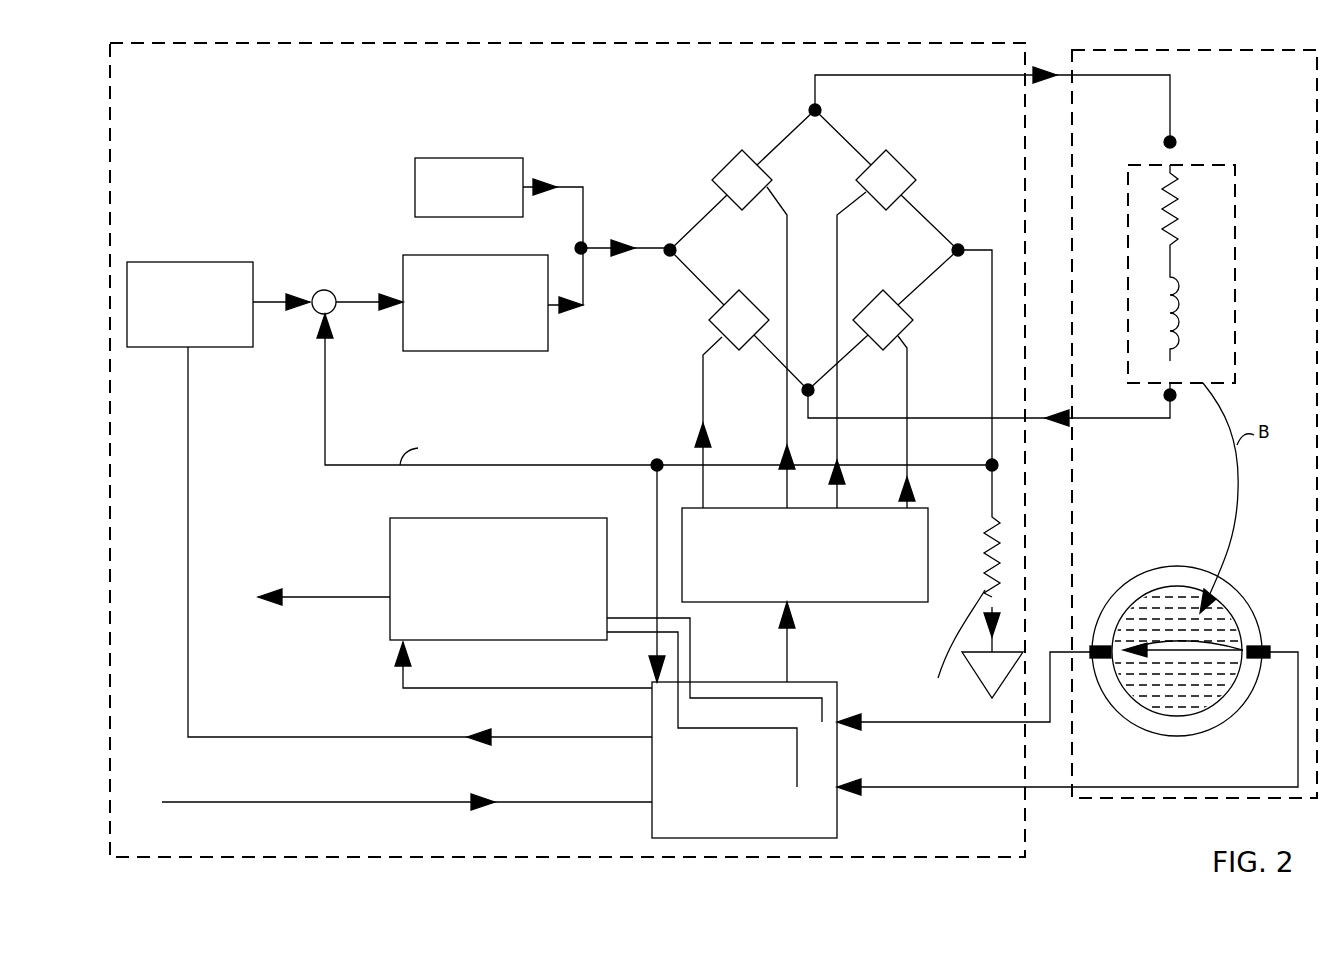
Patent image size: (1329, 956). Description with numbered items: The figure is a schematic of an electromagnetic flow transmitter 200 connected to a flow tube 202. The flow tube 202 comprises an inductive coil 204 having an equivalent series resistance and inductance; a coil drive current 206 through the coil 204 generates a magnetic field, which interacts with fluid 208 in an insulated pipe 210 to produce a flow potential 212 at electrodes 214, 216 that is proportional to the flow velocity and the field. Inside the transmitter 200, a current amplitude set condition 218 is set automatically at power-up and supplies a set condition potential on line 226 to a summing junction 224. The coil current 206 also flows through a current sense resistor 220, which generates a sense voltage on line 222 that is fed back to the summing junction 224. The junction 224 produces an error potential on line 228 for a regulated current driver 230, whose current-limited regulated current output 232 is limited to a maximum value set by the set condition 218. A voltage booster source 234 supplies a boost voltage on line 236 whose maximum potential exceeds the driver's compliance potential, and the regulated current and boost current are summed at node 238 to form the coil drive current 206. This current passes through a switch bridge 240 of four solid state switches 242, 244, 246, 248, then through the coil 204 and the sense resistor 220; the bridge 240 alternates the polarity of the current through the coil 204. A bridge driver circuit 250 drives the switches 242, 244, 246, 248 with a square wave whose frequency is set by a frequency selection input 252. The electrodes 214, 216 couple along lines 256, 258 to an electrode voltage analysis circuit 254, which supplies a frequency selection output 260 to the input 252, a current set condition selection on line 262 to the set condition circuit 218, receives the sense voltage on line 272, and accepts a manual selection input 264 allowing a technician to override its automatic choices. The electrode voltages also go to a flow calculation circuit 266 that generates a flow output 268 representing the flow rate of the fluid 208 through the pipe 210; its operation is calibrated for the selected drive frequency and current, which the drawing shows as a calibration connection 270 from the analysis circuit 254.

The electromagnetic flow transmitter 200 is at (915, 43).
The flow tube 202 is at (1092, 50).
The inductive coil 204 is at (1192, 165).
The coil drive current 206 is at (1047, 70).
The fluid 208 is at (1212, 622).
The insulated pipe 210 is at (1165, 567).
The flow potential 212 is at (1215, 648).
The electrode 214 is at (1092, 692).
The electrode 216 is at (1262, 692).
The current amplitude set condition 218 is at (222, 262).
The current sense resistor 220 is at (985, 548).
The line carrying voltage Vsense 222 is at (326, 393).
The summing junction 224 is at (315, 290).
The line carrying set condition potential 226 is at (272, 303).
The error potential line 228 is at (366, 298).
The regulated current driver 230 is at (412, 255).
The regulated current output 232 is at (552, 310).
The voltage booster source 234 is at (450, 158).
The boost voltage line 236 is at (530, 185).
The node 238 is at (583, 245).
The switch bridge 240 is at (820, 299).
The solid state switch 242 is at (760, 172).
The solid state switch 244 is at (898, 160).
The solid state switch 246 is at (746, 290).
The solid state switch 248 is at (868, 300).
The bridge driver circuit 250 is at (851, 560).
The frequency selection input 252 is at (775, 606).
The electrode voltage analysis circuit 254 is at (838, 815).
The line 256 is at (930, 722).
The line 258 is at (940, 787).
The frequency selection output 260 is at (780, 682).
The current set condition selection line 262 is at (188, 510).
The manual selection input 264 is at (515, 802).
The flow calculation circuit 266 is at (525, 518).
The flow output 268 is at (300, 598).
The calibration line 270 is at (520, 688).
The line carrying voltage Vsense 272 is at (657, 505).